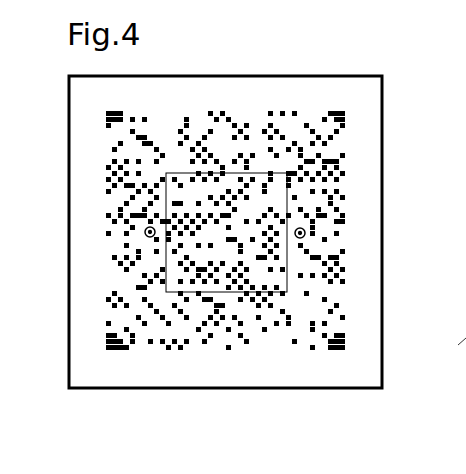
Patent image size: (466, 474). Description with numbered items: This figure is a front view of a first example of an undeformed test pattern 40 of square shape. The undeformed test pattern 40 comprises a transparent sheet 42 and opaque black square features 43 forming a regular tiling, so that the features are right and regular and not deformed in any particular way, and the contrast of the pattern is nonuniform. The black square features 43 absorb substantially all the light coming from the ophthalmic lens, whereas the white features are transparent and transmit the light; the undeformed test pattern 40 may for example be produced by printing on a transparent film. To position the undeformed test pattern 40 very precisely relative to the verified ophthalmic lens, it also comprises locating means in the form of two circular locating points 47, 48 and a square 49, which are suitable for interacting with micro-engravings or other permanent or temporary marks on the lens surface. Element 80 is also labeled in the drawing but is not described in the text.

The undeformed test pattern 40 is at (409, 102).
The transparent sheet 42 is at (383, 287).
The opaque black square features 43 is at (295, 347).
The circular locating point 47 is at (146, 234).
The circular locating point 48 is at (305, 237).
The square 49 is at (227, 173).
The substrate 80 is at (465, 338).